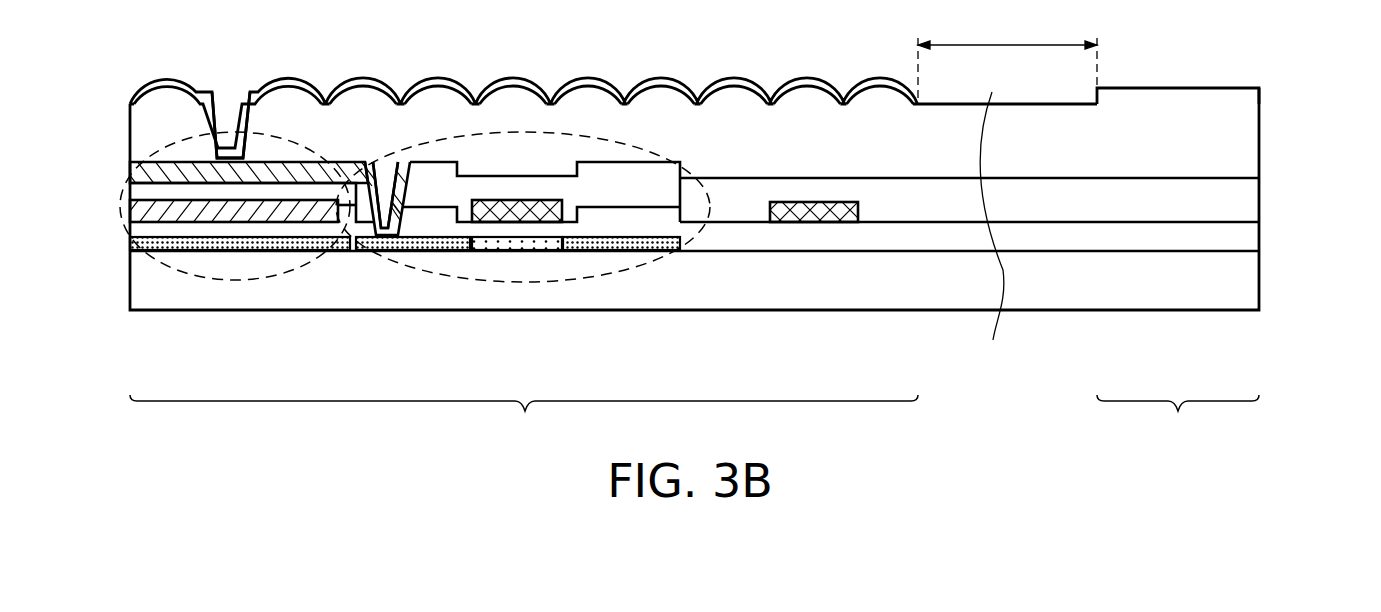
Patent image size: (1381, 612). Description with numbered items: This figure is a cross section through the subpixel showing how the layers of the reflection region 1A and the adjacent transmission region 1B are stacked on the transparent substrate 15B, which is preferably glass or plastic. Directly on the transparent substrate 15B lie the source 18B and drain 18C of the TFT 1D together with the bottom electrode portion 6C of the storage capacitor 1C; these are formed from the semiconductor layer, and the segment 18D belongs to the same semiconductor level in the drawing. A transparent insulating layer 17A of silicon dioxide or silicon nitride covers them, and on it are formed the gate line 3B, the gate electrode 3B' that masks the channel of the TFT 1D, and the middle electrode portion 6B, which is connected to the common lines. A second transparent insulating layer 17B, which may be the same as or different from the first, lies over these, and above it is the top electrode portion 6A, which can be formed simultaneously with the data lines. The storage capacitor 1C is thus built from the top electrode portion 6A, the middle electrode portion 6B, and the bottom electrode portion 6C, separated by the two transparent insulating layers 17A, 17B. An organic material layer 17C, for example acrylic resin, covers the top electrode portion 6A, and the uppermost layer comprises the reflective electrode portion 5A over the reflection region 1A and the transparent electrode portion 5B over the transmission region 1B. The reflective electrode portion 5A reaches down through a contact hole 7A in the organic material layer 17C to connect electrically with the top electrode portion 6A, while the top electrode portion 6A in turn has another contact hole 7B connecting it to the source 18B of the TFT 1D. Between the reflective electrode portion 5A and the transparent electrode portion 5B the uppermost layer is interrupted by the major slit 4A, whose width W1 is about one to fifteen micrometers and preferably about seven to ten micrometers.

The reflection region 1A is at (524, 421).
The transmission region 1B is at (1178, 423).
The storage capacitor 1C is at (232, 281).
The TFT 1D is at (487, 282).
The gate line 3B is at (814, 119).
The gate electrode 3B' is at (517, 119).
The major slit 4A is at (993, 233).
The reflective electrode portion 5A is at (143, 91).
The transparent electrode portion 5B is at (1242, 97).
The top electrode portion 6A is at (130, 172).
The middle electrode portion 6B is at (130, 210).
The bottom electrode portion 6C is at (355, 299).
The contact hole 7A is at (227, 105).
The contact hole 7B is at (380, 163).
The transparent substrate 15B is at (142, 280).
The transparent insulating layer 17A is at (1248, 237).
The transparent insulating layer 17B is at (1242, 201).
The organic material layer 17C is at (1242, 145).
The source 18B is at (407, 238).
The drain 18C is at (633, 238).
The conductive segment 18D is at (543, 238).
The width of the major slit W1 is at (1007, 57).